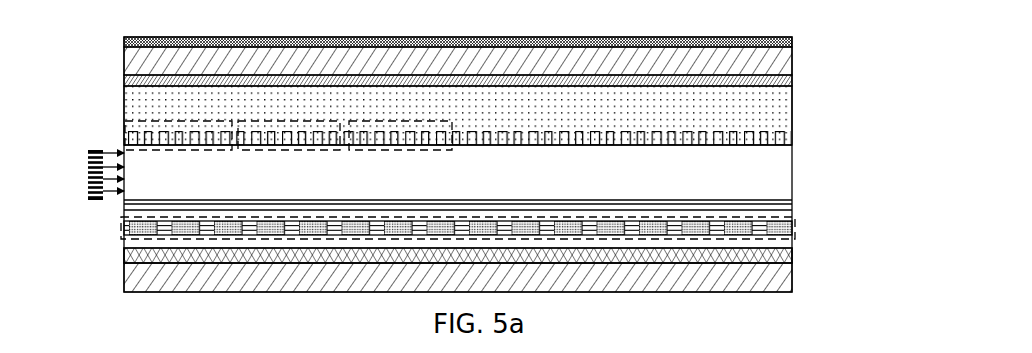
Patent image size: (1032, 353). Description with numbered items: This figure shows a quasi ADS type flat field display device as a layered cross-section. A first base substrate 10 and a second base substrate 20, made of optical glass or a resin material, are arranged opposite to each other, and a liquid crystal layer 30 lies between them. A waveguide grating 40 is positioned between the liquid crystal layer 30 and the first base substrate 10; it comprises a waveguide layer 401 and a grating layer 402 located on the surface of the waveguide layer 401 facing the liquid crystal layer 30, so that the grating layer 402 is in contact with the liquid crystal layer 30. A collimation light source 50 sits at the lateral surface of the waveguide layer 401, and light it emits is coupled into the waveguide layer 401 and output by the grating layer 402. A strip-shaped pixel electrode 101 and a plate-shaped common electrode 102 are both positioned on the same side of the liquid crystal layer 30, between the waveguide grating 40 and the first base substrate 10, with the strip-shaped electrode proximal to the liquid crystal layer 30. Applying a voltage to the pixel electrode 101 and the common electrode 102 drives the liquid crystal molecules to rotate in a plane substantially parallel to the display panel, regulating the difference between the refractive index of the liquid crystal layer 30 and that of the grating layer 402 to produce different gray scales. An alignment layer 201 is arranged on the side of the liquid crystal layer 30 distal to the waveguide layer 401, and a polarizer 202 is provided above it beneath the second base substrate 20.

The first base substrate 10 is at (456, 245).
The pixel electrode 101 is at (121, 228).
The common electrode 102 is at (124, 255).
The second base substrate 20 is at (456, 52).
The alignment layer 201 is at (124, 80).
The polarizer 202 is at (123, 43).
The liquid crystal layer 30 is at (792, 88).
The waveguide grating 40 is at (517, 149).
The waveguide layer 401 is at (792, 173).
The grating layer 402 is at (792, 138).
The collimation light source 50 is at (88, 150).